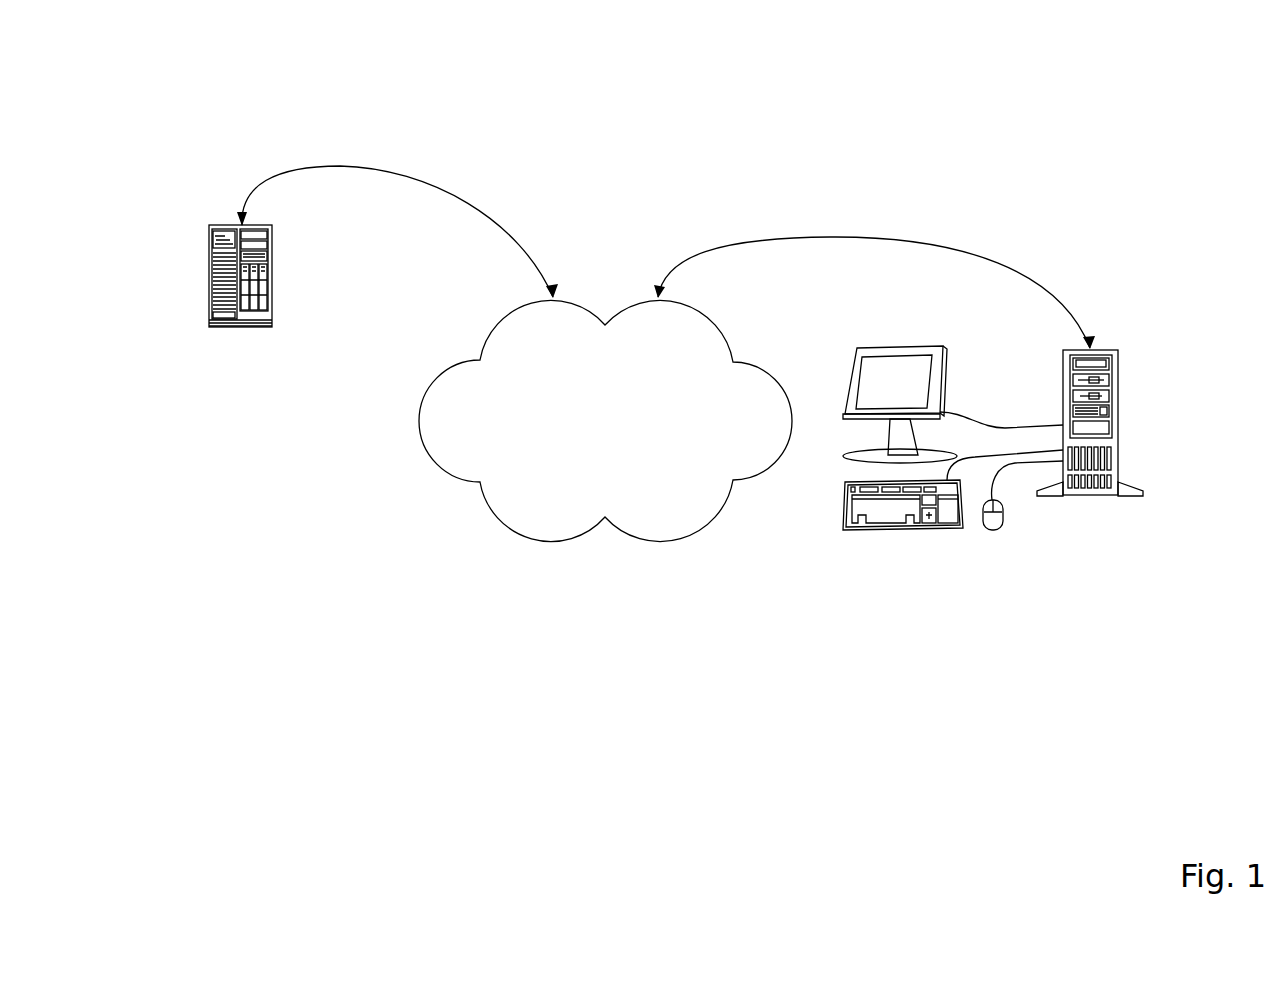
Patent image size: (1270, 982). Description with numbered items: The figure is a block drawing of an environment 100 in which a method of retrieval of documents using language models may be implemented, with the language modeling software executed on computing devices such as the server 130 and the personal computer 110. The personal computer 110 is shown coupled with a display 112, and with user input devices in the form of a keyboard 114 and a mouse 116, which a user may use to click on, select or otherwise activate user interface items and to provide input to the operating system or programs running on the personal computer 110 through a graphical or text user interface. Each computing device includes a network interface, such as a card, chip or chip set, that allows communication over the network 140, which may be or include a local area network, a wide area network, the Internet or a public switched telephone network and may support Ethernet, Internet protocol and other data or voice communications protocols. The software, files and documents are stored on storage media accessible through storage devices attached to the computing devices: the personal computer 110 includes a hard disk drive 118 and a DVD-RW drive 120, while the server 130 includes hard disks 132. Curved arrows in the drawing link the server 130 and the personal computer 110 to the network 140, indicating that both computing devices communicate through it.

The environment 100 is at (360, 95).
The personal computer 110 is at (1090, 497).
The display 112 is at (900, 347).
The keyboard 114 is at (874, 530).
The mouse 116 is at (992, 530).
The hard disk drive 118 is at (1108, 422).
The DVD-RW drive 120 is at (1108, 360).
The server 130 is at (238, 328).
The hard disks 132 is at (267, 281).
The network 140 is at (605, 420).